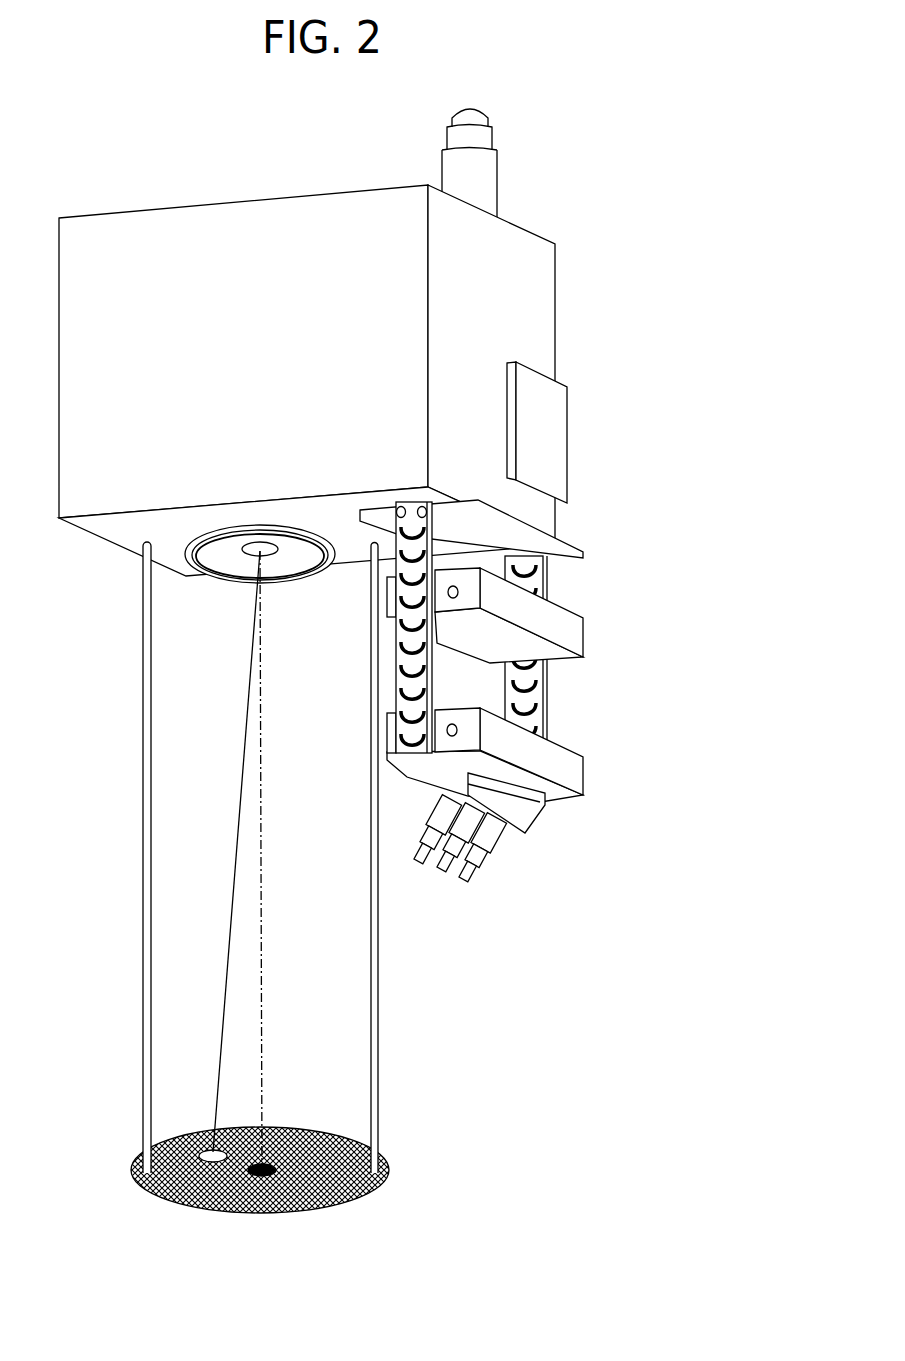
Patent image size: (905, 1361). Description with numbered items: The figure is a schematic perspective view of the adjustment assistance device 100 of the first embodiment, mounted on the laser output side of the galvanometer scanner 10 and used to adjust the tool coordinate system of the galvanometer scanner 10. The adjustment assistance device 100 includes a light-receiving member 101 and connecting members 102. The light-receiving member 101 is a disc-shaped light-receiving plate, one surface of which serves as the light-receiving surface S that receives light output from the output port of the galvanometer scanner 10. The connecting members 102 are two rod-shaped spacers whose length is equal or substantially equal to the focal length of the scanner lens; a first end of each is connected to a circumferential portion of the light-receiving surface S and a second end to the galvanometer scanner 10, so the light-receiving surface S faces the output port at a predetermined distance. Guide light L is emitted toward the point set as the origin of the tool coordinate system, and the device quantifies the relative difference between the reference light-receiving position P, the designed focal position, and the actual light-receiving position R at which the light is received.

The galvanometer scanner 10 is at (200, 203).
The adjustment assistance device 100 is at (275, 924).
The light-receiving member 101 is at (260, 1173).
The connecting members 102 is at (377, 995).
The guide light L is at (237, 828).
The reference light-receiving position P is at (265, 1168).
The actual light-receiving position R is at (205, 1150).
The light-receiving surface S is at (320, 1130).